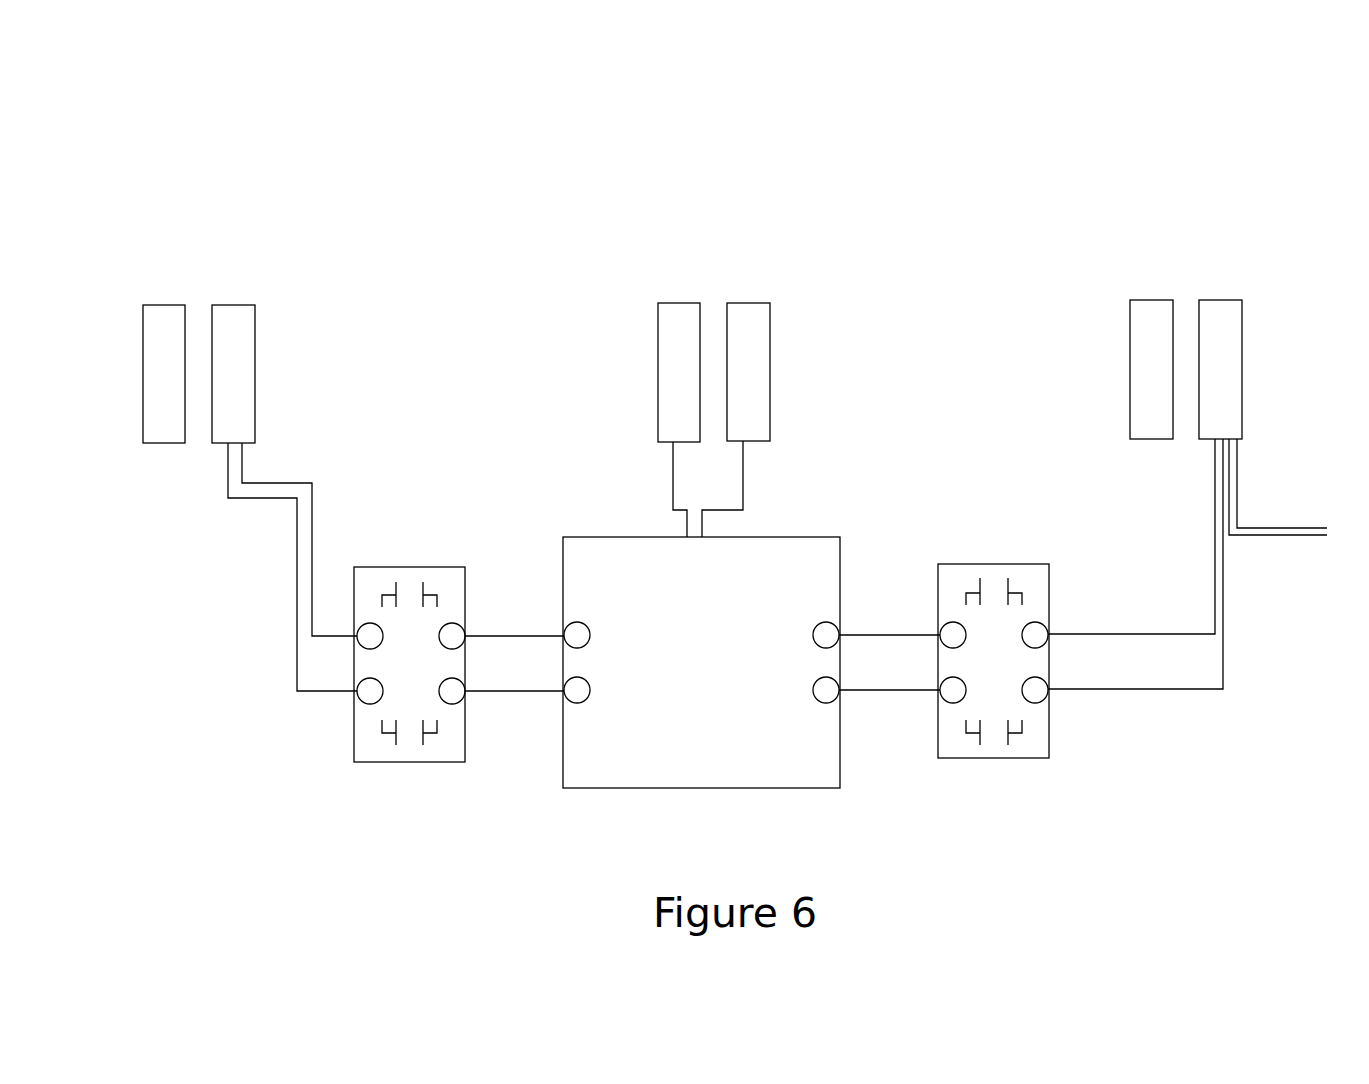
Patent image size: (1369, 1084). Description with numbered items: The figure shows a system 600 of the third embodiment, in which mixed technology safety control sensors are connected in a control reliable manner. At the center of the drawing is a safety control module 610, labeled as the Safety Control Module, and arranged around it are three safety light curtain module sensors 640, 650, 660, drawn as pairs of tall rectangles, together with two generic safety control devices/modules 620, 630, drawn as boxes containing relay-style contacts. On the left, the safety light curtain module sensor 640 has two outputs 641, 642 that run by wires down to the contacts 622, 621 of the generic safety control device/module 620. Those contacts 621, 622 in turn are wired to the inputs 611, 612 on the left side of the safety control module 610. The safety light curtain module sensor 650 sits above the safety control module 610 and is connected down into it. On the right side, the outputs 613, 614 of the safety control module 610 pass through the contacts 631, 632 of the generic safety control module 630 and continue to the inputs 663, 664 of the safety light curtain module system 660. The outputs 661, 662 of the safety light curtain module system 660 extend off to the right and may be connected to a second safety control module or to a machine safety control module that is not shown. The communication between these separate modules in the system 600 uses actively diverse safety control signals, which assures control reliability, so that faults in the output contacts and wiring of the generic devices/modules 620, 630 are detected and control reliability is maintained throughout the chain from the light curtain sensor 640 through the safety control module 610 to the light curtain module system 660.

The system 600 is at (1247, 75).
The safety control module 610 is at (600, 760).
The input 611 is at (601, 637).
The input 612 is at (601, 688).
The output 613 is at (802, 690).
The output 614 is at (802, 635).
The generic safety control device/module 620 is at (438, 580).
The contact 621 is at (409, 607).
The contact 622 is at (409, 725).
The generic safety control module 630 is at (968, 578).
The contact 631 is at (994, 601).
The contact 632 is at (994, 722).
The safety light curtain module sensor 640 is at (205, 318).
The output 641 is at (227, 445).
The output 642 is at (247, 447).
The safety light curtain module sensor 650 is at (717, 317).
The safety light curtain module system 660 is at (1188, 315).
The output 661 is at (1282, 485).
The output 662 is at (1278, 500).
The input 663 is at (1135, 564).
The input 664 is at (1131, 536).